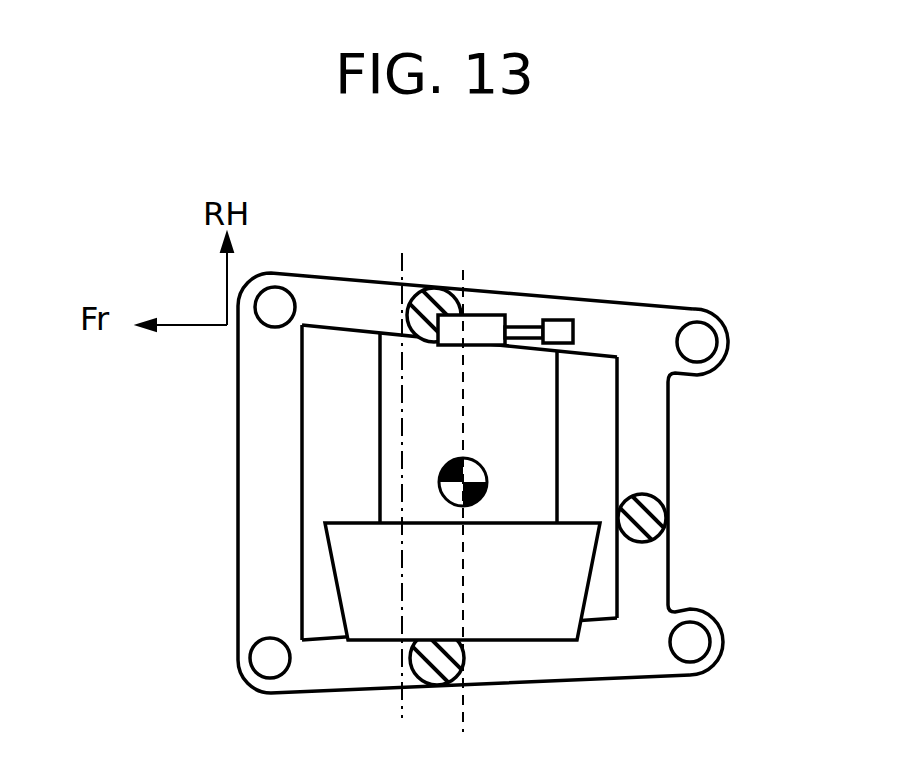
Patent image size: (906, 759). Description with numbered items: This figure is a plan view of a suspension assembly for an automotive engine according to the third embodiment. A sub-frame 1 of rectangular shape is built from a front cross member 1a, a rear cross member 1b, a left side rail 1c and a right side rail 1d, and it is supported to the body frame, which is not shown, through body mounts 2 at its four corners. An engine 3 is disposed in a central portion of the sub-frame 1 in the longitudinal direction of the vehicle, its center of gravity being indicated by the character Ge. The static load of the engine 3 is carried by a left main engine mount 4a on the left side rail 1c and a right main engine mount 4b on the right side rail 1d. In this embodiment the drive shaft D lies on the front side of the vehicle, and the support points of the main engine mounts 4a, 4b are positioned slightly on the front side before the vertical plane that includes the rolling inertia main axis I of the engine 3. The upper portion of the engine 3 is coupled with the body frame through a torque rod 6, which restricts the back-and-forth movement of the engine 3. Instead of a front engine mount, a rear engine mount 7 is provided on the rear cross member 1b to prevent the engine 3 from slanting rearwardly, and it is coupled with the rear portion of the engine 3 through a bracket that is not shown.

The sub-frame 1 is at (451, 468).
The front cross member 1a is at (258, 588).
The rear cross member 1b is at (653, 572).
The left side rail 1c is at (340, 665).
The right side rail 1d is at (388, 303).
The body mounts 2 is at (272, 302).
The engine 3 is at (557, 425).
The left main engine mount 4a is at (448, 660).
The right main engine mount 4b is at (430, 300).
The torque rod 6 is at (577, 325).
The rear engine mount 7 is at (647, 512).
The center of gravity of the engine Ge is at (446, 465).
The drive shaft D is at (407, 273).
The rolling inertia main axis I is at (458, 690).